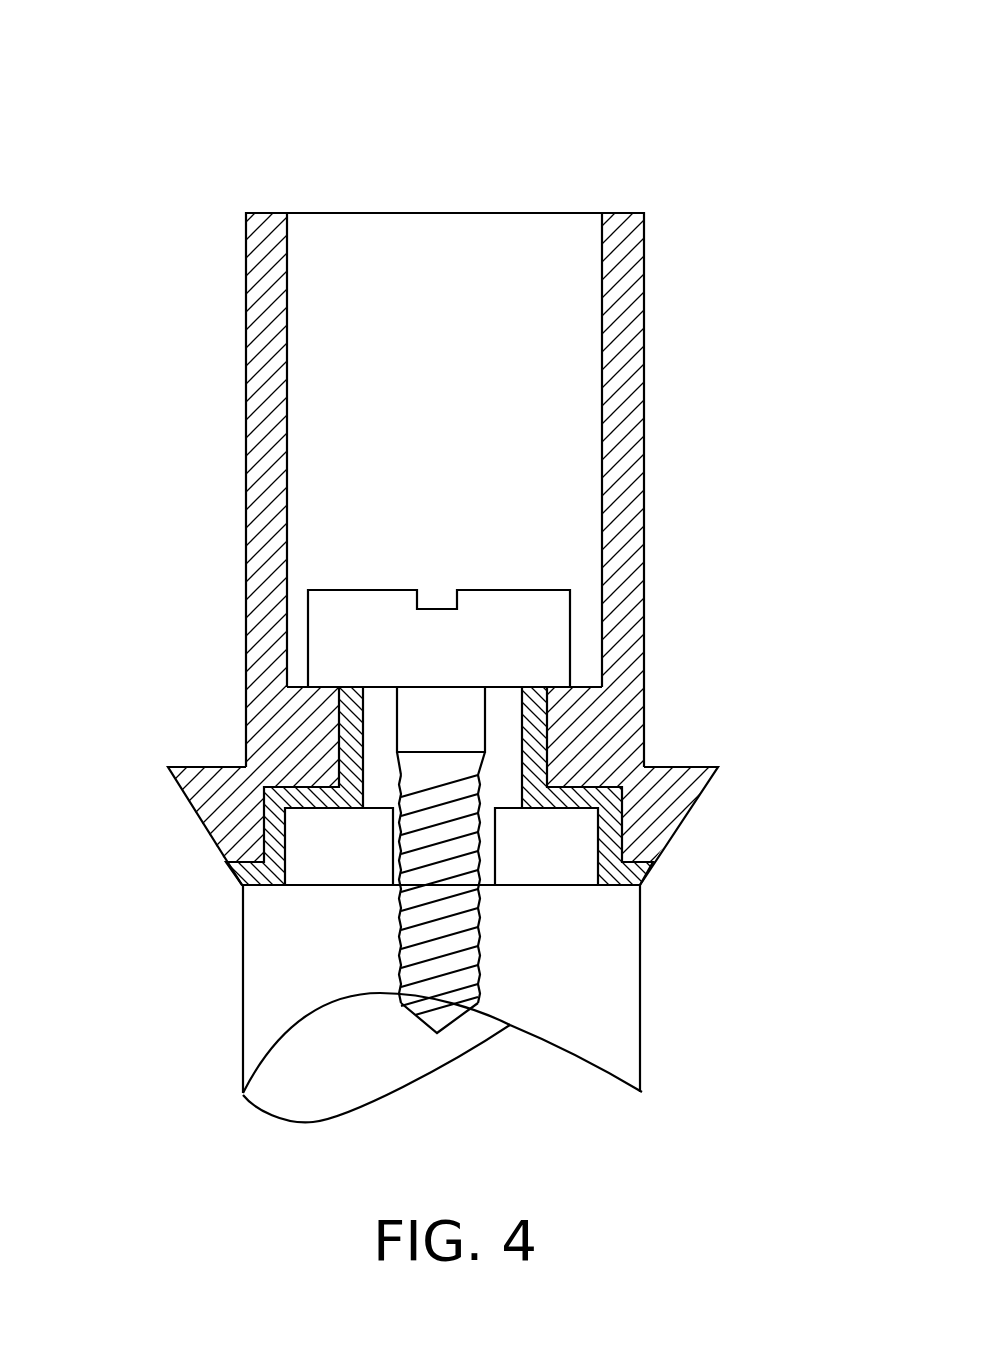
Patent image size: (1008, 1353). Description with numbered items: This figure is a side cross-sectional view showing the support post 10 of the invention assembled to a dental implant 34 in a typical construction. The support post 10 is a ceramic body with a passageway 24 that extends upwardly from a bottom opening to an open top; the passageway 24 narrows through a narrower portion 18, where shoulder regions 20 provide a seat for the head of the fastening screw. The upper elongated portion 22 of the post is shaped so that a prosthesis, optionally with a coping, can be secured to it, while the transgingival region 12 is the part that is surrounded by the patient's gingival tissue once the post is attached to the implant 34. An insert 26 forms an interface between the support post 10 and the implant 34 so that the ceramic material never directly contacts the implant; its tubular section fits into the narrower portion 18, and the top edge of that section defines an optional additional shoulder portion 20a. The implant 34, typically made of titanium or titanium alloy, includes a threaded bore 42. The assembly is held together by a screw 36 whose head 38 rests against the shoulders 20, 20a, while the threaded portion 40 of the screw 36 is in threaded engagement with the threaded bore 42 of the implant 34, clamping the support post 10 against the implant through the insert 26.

The support post 10 is at (595, 147).
The transgingival region 12 is at (682, 828).
The narrower portion 18 is at (500, 733).
The shoulder regions 20 is at (582, 682).
The additional shoulder portion 20a is at (350, 685).
The upper elongated portion 22 is at (643, 430).
The passageway 24 is at (410, 273).
The insert 26 is at (237, 878).
The implant 34 is at (630, 930).
The screw 36 is at (433, 517).
The head 38 is at (357, 590).
The threaded portion 40 is at (417, 918).
The threaded bore 42 is at (478, 978).